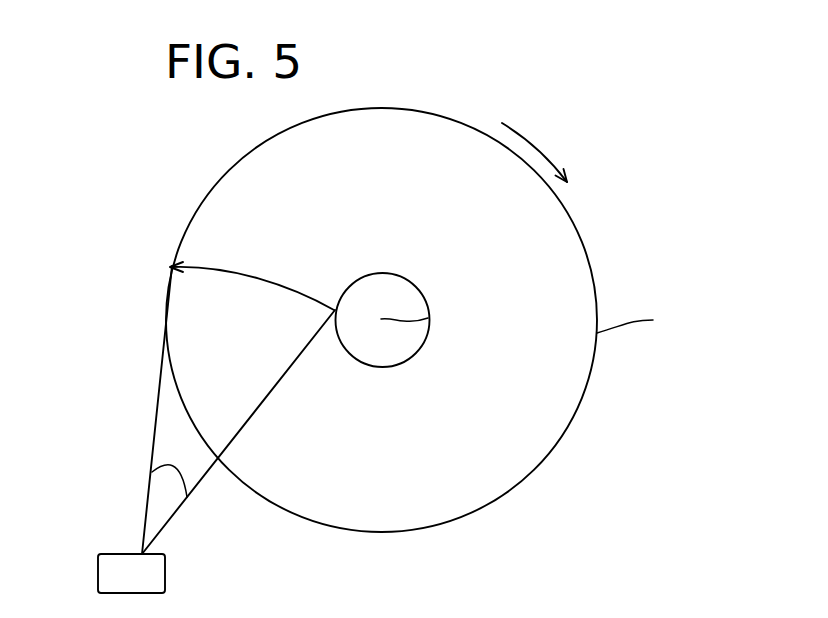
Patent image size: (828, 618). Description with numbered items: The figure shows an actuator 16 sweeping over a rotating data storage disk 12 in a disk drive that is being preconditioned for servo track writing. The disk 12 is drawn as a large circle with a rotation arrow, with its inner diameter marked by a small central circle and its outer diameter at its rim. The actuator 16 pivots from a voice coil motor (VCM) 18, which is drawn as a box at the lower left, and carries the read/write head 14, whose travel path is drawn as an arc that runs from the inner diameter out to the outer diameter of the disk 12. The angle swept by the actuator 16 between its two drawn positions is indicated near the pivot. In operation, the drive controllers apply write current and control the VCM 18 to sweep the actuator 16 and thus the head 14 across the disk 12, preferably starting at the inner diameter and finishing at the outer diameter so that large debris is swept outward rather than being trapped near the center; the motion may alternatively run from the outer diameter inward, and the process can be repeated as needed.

The data storage disk 12 is at (393, 533).
The read/write head 14 is at (334, 310).
The actuator 16 is at (180, 463).
The voice coil motor (VCM) 18 is at (98, 578).